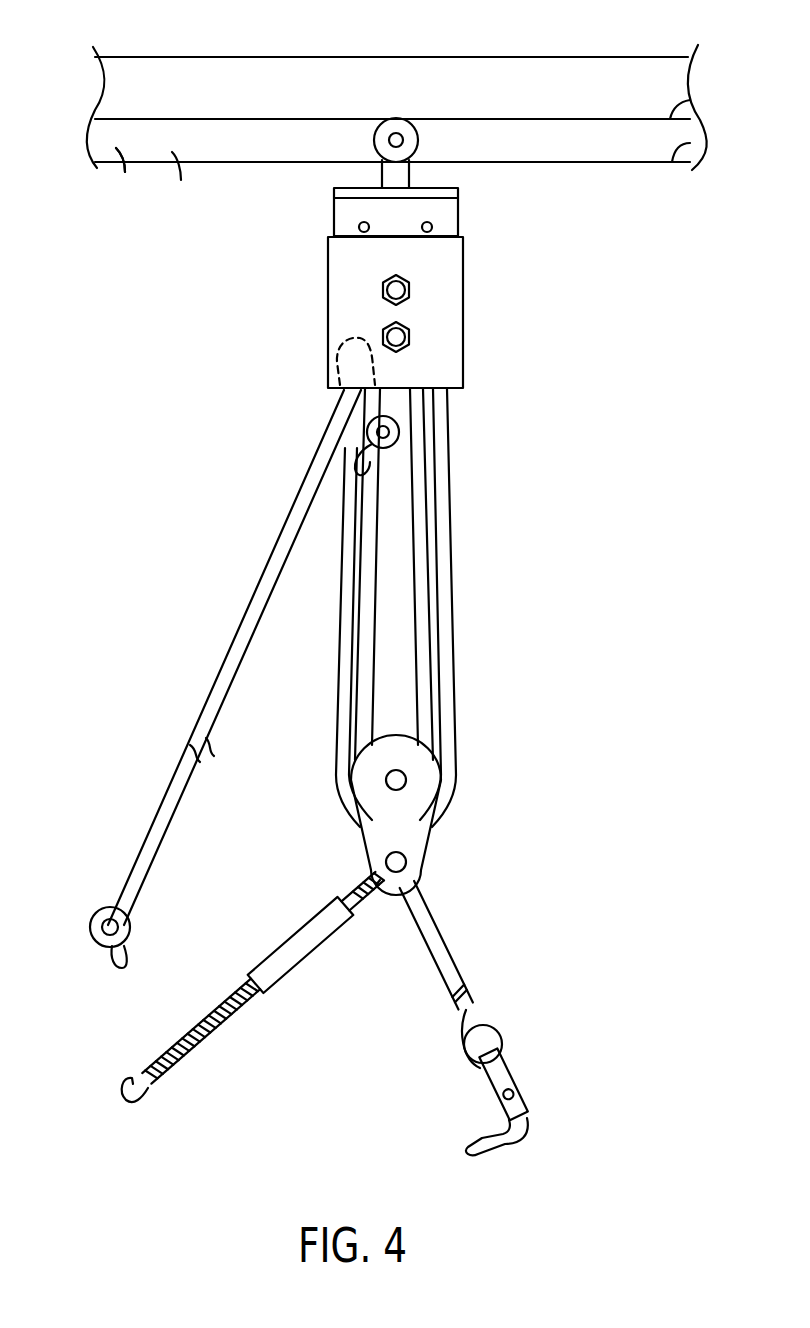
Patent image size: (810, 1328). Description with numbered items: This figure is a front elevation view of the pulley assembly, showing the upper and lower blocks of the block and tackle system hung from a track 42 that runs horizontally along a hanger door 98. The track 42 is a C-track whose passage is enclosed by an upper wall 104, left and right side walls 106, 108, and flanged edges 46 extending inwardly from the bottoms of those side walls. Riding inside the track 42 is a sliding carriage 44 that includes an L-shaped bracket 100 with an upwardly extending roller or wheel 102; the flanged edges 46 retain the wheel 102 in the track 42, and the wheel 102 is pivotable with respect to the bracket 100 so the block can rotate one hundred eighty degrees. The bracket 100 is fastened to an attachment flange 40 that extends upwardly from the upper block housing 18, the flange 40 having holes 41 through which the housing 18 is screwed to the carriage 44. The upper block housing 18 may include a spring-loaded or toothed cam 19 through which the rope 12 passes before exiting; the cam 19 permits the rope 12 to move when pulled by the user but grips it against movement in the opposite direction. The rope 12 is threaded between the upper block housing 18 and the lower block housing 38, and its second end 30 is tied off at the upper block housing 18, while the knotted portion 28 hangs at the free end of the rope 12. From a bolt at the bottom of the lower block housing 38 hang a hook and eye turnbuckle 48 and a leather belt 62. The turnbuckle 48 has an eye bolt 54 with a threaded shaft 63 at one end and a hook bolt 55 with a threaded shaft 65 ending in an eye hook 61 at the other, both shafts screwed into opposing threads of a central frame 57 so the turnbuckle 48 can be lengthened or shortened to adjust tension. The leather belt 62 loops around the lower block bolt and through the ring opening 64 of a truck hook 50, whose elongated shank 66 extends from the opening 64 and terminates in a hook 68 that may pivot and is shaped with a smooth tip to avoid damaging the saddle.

The rope 12 is at (230, 652).
The upper block housing 18 is at (320, 263).
The cam 19 is at (338, 343).
The knot 28 is at (122, 878).
The second end 30 is at (370, 442).
The lower block housing 38 is at (346, 821).
The attachment flange 40 is at (345, 218).
The holes 41 is at (367, 223).
The track 42 is at (181, 180).
The sliding carriage 44 is at (438, 184).
The flanged edges 46 is at (690, 143).
The hook and eye turnbuckle 48 is at (242, 989).
The truck hook 50 is at (511, 1021).
The eye bolt 54 is at (372, 880).
The hook bolt 55 is at (223, 1072).
The central frame 57 is at (303, 920).
The eye hook 61 is at (120, 1097).
The leather belt 62 is at (440, 922).
The threaded shaft 63 is at (382, 897).
The ring opening 64 is at (500, 1046).
The threaded shaft 65 is at (209, 1053).
The elongated shank 66 is at (497, 1090).
The hook 68 is at (465, 1150).
The hanger door 98 is at (575, 57).
The L-shaped bracket 100 is at (334, 190).
The wheel 102 is at (377, 133).
The upper wall 104 is at (690, 100).
The left side wall 106 is at (125, 172).
The right side wall 108 is at (125, 172).